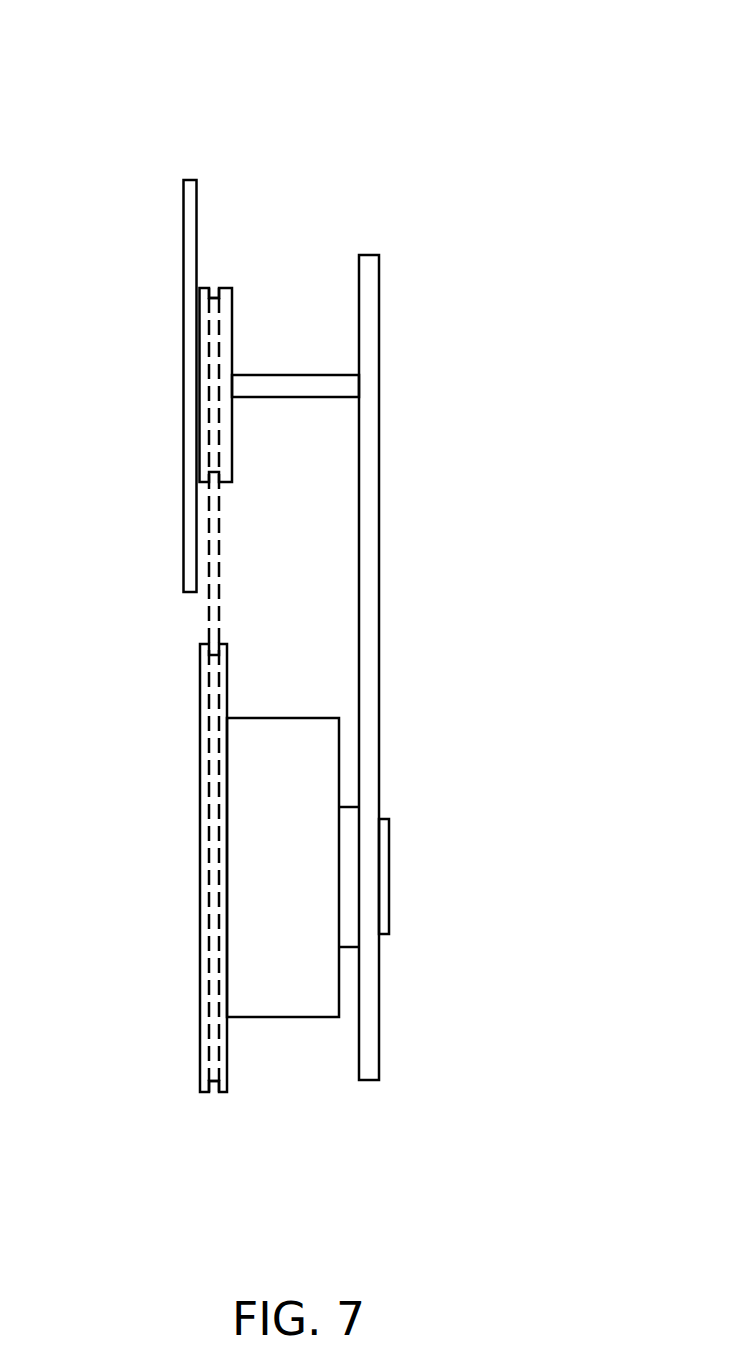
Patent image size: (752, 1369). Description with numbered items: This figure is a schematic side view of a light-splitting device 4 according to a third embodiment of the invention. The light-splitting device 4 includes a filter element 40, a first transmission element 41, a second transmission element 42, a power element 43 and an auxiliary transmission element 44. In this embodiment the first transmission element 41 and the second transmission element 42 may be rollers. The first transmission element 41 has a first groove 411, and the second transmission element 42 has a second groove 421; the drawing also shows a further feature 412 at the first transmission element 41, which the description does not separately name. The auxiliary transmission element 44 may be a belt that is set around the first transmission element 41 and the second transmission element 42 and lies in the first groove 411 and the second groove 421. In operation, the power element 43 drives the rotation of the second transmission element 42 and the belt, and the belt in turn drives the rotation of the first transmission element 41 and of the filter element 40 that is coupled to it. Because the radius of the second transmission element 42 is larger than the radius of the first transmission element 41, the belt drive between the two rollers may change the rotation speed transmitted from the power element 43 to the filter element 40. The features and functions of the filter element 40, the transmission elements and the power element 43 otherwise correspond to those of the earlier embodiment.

The light-splitting device 4 is at (79, 32).
The filter element 40 is at (187, 577).
The first transmission element 41 is at (232, 288).
The first groove 411 is at (272, 373).
The first slot 412 is at (216, 288).
The second transmission element 42 is at (204, 1059).
The second groove 421 is at (213, 1083).
The power element 43 is at (277, 1005).
The auxiliary transmission element 44 is at (208, 617).